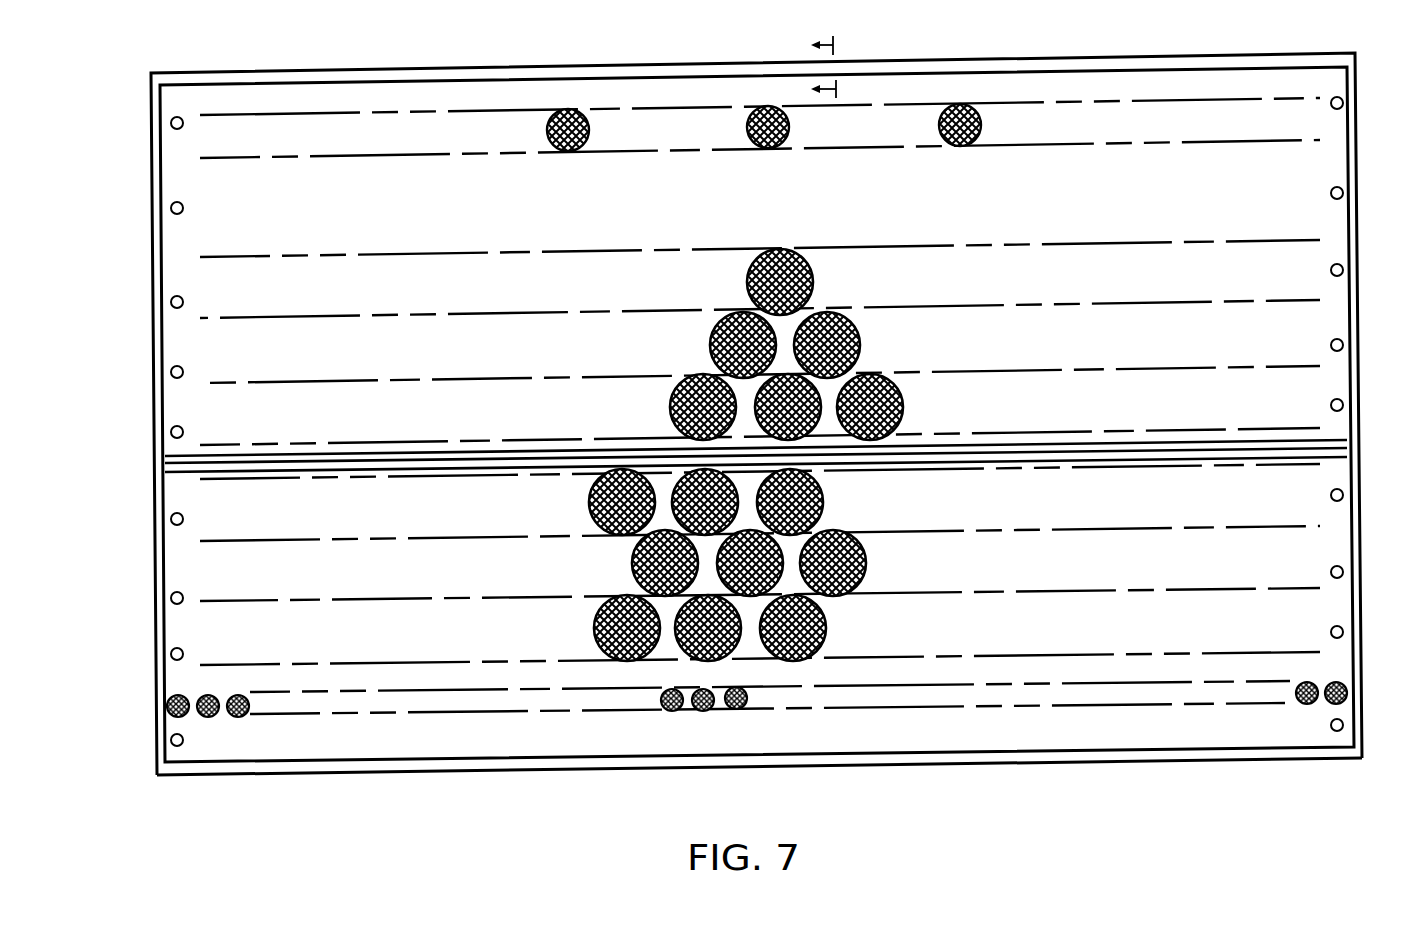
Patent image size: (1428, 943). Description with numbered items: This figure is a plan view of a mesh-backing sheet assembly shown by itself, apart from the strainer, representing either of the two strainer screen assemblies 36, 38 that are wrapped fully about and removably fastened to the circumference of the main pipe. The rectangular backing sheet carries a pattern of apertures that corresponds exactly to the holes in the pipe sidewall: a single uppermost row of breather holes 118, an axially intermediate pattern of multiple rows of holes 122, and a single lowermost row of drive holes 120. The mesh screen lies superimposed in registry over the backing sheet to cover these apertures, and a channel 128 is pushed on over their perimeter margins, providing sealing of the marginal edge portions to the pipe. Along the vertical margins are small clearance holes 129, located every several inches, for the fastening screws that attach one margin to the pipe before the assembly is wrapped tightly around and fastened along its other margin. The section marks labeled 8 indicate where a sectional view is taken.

The section line 8- 8 is at (837, 66).
The strainer screen assembly 36 is at (151, 73).
The strainer screen assembly 38 is at (152, 775).
The breather holes 118 is at (982, 126).
The drive holes 120 is at (743, 716).
The holes 122 is at (820, 282).
The channel 128 is at (940, 62).
The clearance holes 129 is at (171, 372).